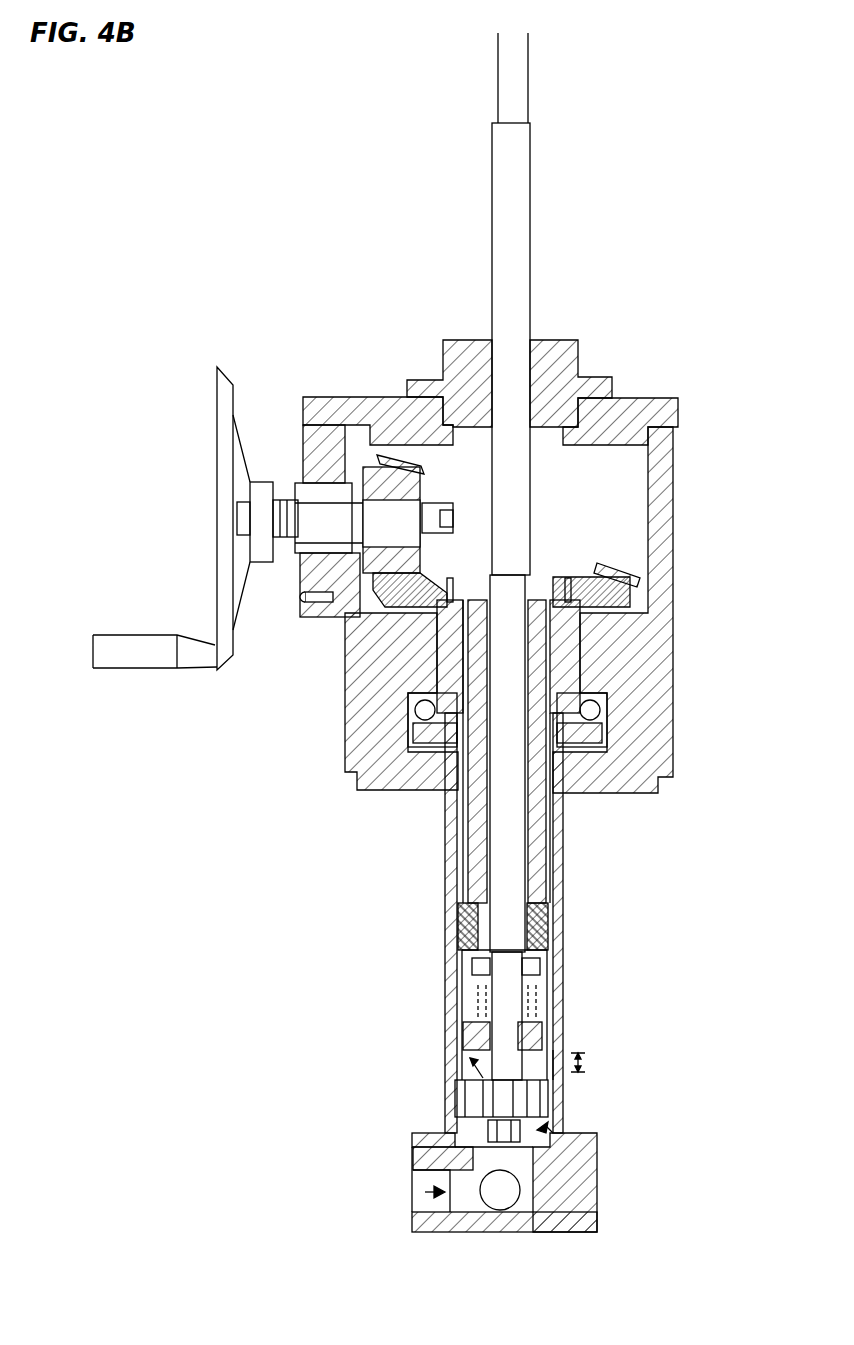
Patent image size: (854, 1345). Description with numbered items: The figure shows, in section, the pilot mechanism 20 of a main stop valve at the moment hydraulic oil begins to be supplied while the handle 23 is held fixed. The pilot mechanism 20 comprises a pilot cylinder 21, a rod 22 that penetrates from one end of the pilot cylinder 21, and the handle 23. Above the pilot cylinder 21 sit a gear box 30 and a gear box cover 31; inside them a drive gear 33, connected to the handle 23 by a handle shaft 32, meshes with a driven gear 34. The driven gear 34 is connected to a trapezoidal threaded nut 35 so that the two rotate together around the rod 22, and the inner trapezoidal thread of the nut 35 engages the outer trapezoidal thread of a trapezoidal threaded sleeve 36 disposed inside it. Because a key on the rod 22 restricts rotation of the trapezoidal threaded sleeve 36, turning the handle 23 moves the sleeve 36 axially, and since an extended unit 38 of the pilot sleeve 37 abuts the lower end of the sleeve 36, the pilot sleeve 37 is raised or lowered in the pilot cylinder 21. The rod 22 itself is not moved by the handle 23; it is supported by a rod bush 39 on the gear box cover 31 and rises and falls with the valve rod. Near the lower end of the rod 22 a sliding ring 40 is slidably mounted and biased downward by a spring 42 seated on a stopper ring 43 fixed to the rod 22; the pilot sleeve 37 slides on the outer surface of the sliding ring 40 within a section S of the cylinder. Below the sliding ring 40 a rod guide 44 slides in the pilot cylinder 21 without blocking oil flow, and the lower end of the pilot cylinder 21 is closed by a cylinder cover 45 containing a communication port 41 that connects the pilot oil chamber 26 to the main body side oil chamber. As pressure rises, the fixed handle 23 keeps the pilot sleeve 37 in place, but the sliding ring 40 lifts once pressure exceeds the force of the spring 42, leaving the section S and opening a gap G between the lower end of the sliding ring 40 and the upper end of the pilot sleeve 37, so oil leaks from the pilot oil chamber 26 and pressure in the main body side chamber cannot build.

The pilot mechanism 20 is at (268, 141).
The pilot cylinder 21 is at (563, 855).
The rod 22 is at (511, 303).
The handle 23 is at (218, 419).
The pilot oil chamber 26 is at (540, 1128).
The gear box 30 is at (660, 446).
The gear box cover 31 is at (677, 412).
The handle shaft 32 is at (323, 518).
The drive gear 33 is at (385, 477).
The driven gear 34 is at (635, 600).
The trapezoidal threaded nut 35 is at (563, 640).
The trapezoidal threaded sleeve 36 is at (530, 690).
The pilot sleeve 37 is at (565, 1056).
The extended unit 38 is at (551, 935).
The rod bush 39 is at (570, 360).
The sliding ring 40 is at (470, 1030).
The communication port 41 is at (430, 1192).
The spring 42 is at (470, 993).
The stopper ring 43 is at (462, 965).
The rod guide 44 is at (466, 1100).
The cylinder cover 45 is at (582, 1210).
The gap G is at (463, 1067).
The section S is at (587, 1063).